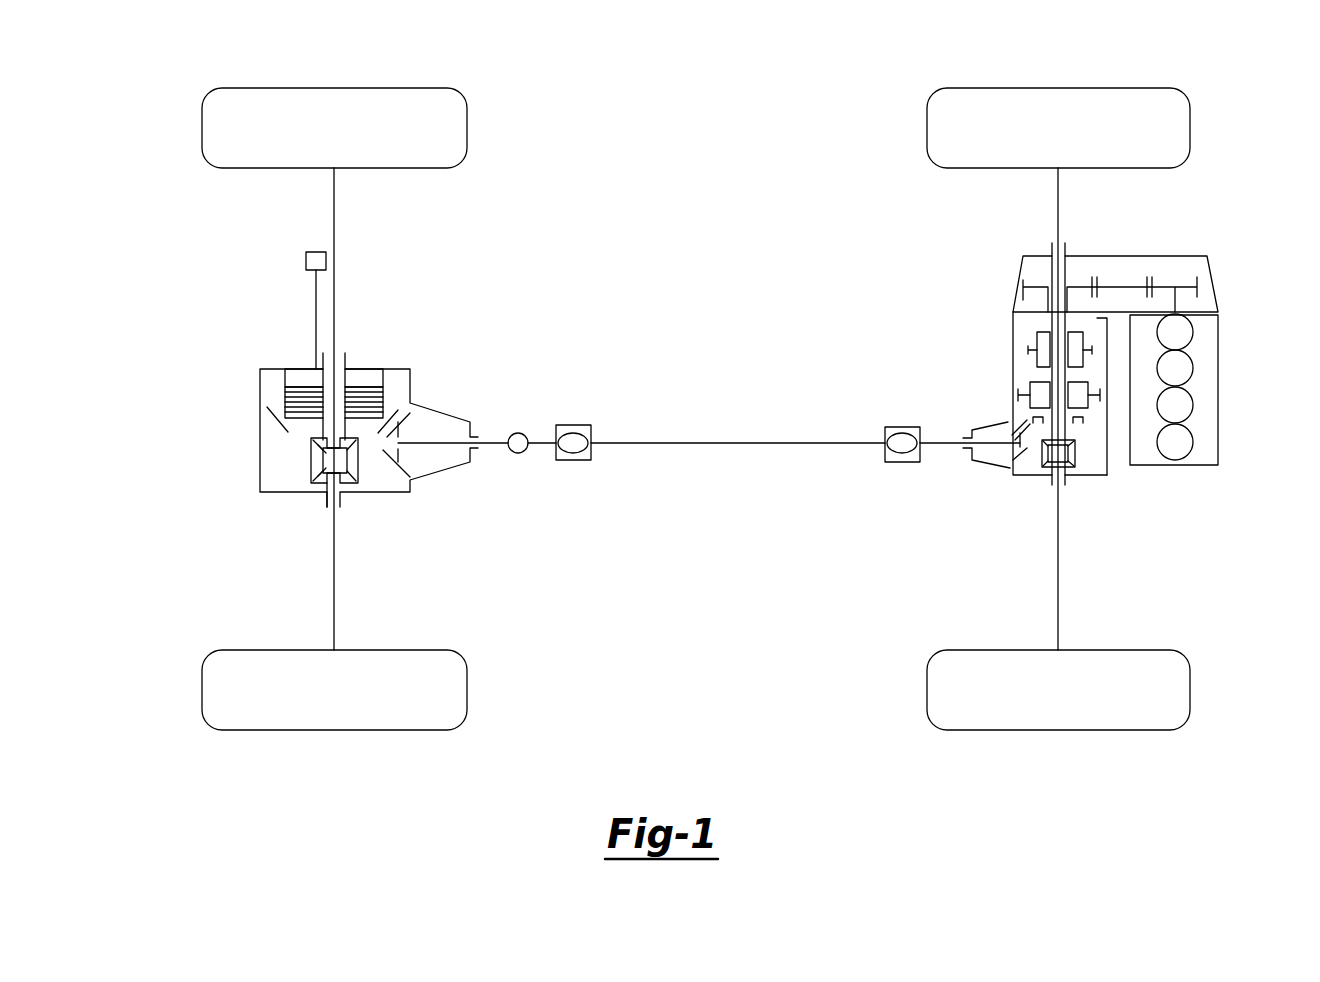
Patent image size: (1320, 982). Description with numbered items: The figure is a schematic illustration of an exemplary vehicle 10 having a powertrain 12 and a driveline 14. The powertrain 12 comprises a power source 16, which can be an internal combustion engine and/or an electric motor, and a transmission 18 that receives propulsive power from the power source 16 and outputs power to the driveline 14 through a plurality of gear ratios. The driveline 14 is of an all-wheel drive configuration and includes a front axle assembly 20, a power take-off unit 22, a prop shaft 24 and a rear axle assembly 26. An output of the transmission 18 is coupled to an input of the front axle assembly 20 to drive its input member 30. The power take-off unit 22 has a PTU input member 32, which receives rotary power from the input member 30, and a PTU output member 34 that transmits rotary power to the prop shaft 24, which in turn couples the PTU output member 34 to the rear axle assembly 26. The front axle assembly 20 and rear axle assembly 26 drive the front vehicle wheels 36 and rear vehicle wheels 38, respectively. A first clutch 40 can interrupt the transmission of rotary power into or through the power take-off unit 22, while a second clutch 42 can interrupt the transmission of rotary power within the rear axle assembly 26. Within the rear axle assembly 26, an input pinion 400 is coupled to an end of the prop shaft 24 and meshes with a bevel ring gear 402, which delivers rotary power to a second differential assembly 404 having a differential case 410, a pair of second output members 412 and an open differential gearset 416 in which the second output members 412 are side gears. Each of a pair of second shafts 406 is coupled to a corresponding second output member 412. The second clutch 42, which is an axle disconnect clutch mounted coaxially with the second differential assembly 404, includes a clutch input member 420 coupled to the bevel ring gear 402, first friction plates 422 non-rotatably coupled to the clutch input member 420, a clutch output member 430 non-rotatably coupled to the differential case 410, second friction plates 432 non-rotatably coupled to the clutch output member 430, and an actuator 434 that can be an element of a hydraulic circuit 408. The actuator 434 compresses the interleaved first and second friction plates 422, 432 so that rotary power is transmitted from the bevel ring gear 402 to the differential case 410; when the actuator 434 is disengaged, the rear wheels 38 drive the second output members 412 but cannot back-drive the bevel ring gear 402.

The vehicle 10 is at (145, 773).
The powertrain 12 is at (1123, 364).
The driveline 14 is at (659, 381).
The power source 16 is at (1203, 453).
The transmission 18 is at (1203, 265).
The front axle assembly 20 is at (1041, 409).
The power take-off unit 22 is at (1041, 424).
The prop shaft 24 is at (620, 443).
The rear axle assembly 26 is at (315, 427).
The input member 30 is at (1045, 297).
The PTU input member 32 is at (1025, 425).
The PTU output member 34 is at (940, 442).
The front vehicle wheels 36 is at (927, 125).
The rear vehicle wheels 38 is at (202, 125).
The first clutch 40 is at (1097, 418).
The second clutch 42 is at (334, 363).
The input pinion 400 is at (385, 455).
The bevel ring gear 402 is at (280, 422).
The second differential assembly 404 is at (312, 492).
The second shafts 406 is at (335, 203).
The hydraulic circuit 408 is at (306, 258).
The differential case 410 is at (255, 491).
The second output members 412 is at (333, 478).
The open differential gearset 416 is at (300, 470).
The clutch input member 420 is at (285, 400).
The first friction plates 422 is at (287, 390).
The clutch output member 430 is at (347, 383).
The second friction plates 432 is at (372, 387).
The actuator 434 is at (307, 368).